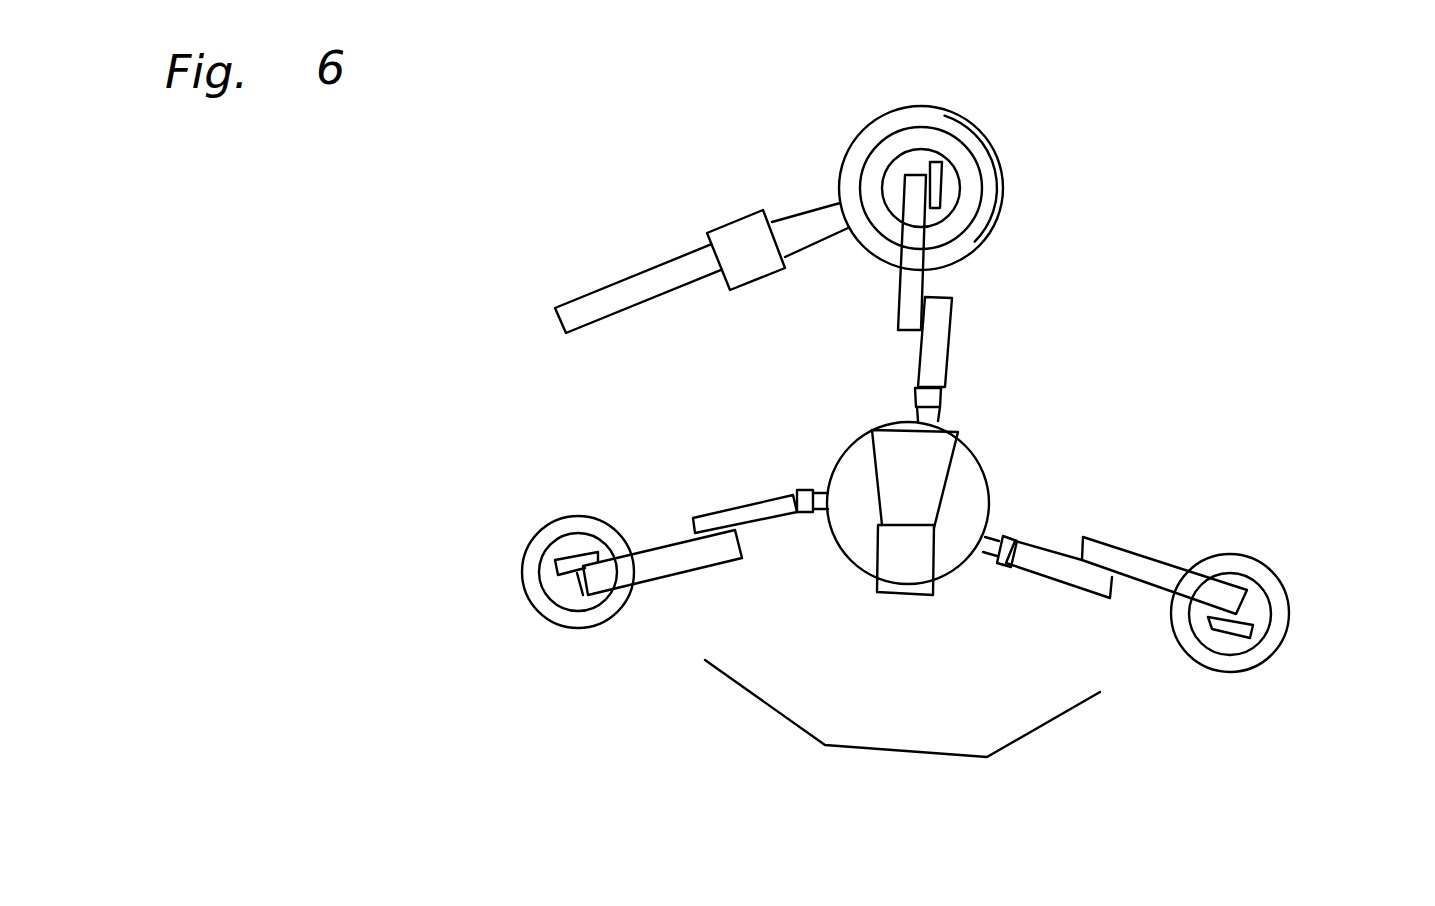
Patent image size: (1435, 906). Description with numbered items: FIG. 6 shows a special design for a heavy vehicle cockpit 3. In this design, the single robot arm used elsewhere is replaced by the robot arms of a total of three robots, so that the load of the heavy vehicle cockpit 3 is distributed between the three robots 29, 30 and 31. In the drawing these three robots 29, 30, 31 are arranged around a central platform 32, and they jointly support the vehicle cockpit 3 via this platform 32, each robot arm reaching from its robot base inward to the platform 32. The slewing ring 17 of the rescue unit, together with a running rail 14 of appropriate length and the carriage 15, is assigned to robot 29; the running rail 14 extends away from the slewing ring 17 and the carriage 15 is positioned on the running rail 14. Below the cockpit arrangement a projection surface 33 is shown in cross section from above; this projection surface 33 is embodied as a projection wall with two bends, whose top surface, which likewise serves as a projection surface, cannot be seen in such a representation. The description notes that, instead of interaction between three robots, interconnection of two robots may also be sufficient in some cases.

The vehicle cockpit 3 is at (897, 455).
The running rail 14 is at (628, 278).
The carriage 15 is at (720, 232).
The slewing ring 17 is at (995, 148).
The robot 29 is at (947, 192).
The robot 30 is at (542, 525).
The robot 31 is at (1293, 603).
The platform 32 is at (985, 468).
The projection surface 33 is at (773, 705).